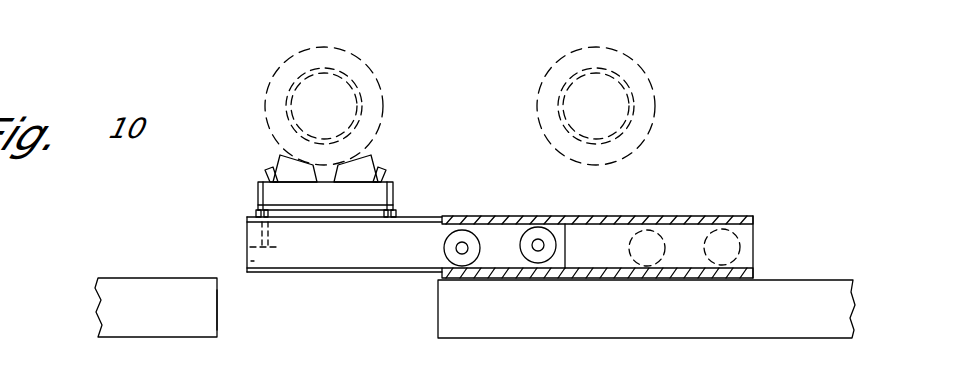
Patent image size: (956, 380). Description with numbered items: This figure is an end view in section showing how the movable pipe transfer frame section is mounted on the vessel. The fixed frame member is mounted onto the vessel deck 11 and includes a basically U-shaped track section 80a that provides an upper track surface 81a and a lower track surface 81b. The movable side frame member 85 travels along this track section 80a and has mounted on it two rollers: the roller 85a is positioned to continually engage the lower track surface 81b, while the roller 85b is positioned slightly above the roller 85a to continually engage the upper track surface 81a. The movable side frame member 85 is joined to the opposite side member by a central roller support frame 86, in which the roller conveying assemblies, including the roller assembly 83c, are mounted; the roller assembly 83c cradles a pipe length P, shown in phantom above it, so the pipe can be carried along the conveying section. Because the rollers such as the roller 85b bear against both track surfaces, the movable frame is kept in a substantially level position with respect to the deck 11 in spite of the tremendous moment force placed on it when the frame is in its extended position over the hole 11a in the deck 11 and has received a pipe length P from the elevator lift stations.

The pipe length P is at (363, 62).
The roller assembly 83c is at (366, 159).
The movable side frame member 85 is at (410, 217).
The roller 85a is at (463, 230).
The roller 85b is at (538, 227).
The central roller support frame 86 is at (247, 233).
The upper track surface 81a is at (590, 226).
The lower track surface 81b is at (747, 266).
The track section 80a is at (705, 216).
The vessel deck 11 is at (130, 278).
The hole 11a is at (217, 307).